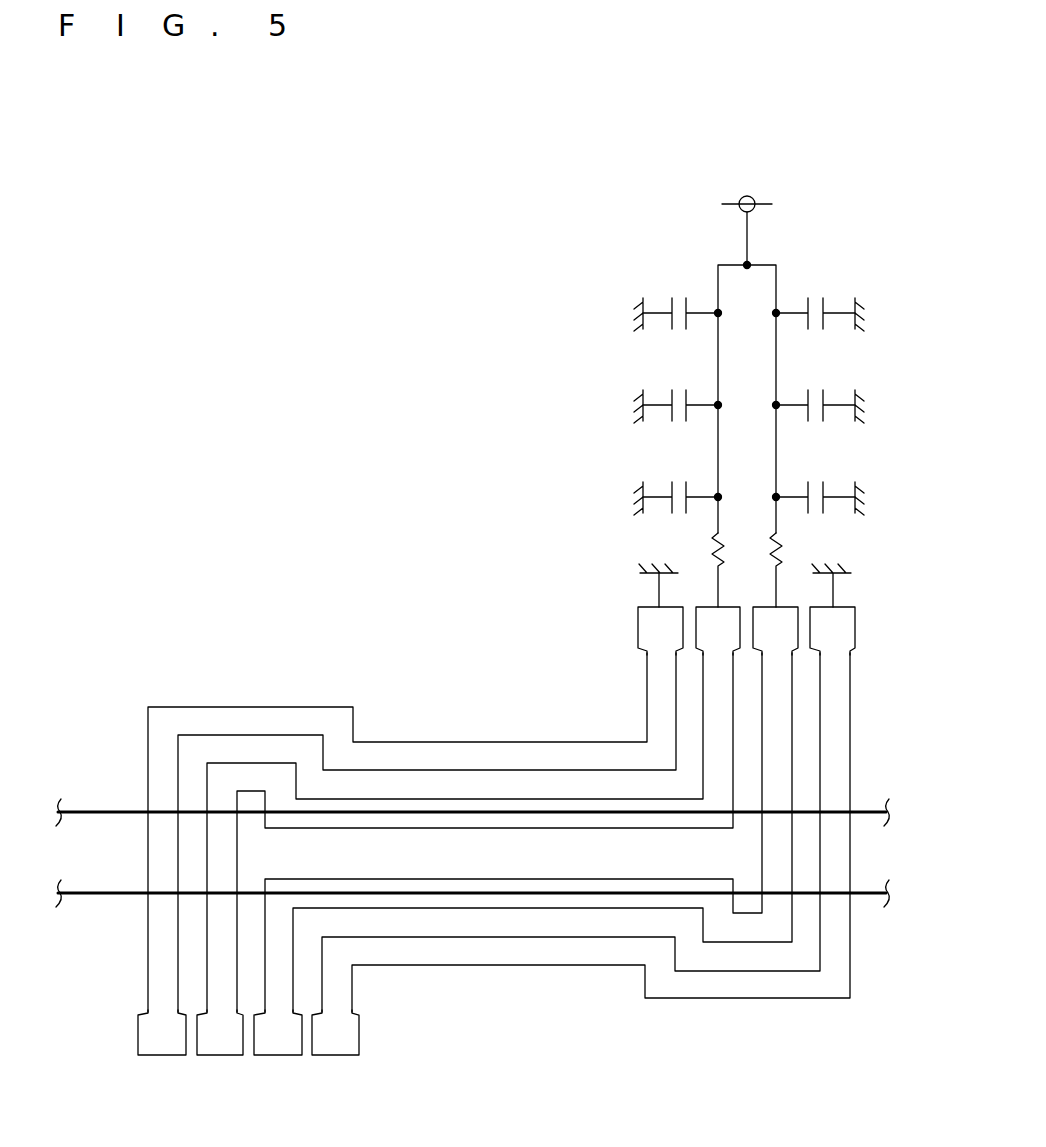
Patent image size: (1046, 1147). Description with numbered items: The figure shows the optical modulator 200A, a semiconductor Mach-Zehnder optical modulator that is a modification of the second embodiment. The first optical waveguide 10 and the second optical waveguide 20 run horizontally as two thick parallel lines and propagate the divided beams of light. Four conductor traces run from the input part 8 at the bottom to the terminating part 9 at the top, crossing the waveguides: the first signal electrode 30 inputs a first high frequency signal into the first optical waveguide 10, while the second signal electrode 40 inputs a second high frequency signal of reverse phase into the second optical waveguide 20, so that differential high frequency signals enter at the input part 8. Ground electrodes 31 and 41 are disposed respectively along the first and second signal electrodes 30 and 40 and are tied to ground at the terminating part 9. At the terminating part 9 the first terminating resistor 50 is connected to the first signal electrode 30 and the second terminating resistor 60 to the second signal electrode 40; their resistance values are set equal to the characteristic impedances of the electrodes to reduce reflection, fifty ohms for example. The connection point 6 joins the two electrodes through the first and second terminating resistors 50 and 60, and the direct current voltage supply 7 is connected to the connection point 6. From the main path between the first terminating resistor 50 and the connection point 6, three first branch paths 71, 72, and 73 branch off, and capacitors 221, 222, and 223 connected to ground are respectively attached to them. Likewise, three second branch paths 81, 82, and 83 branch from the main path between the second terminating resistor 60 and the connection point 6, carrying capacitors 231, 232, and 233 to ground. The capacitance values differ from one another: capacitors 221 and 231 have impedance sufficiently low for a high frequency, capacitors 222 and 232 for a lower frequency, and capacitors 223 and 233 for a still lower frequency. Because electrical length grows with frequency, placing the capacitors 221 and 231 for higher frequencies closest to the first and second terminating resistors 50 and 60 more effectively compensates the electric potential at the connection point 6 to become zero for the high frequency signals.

The optical modulator 200A is at (284, 471).
The direct current voltage supply 7 is at (749, 196).
The connection point 6 is at (752, 263).
The capacitor 223 is at (679, 296).
The capacitor 222 is at (679, 388).
The capacitor 221 is at (679, 480).
The capacitor 233 is at (817, 296).
The capacitor 232 is at (817, 388).
The capacitor 231 is at (817, 480).
The first branch path 73 is at (612, 317).
The first branch path 72 is at (612, 409).
The first branch path 71 is at (612, 501).
The second branch path 83 is at (885, 320).
The second branch path 82 is at (885, 412).
The second branch path 81 is at (885, 504).
The first terminating resistor 50 is at (710, 551).
The second terminating resistor 60 is at (784, 551).
The terminating part 9 is at (871, 607).
The input part 8 is at (372, 1015).
The ground electrode 31 is at (165, 1046).
The first signal electrode 30 is at (223, 1046).
The second signal electrode 40 is at (528, 884).
The ground electrode 41 is at (337, 1046).
The first optical waveguide 10 is at (84, 808).
The second optical waveguide 20 is at (86, 900).